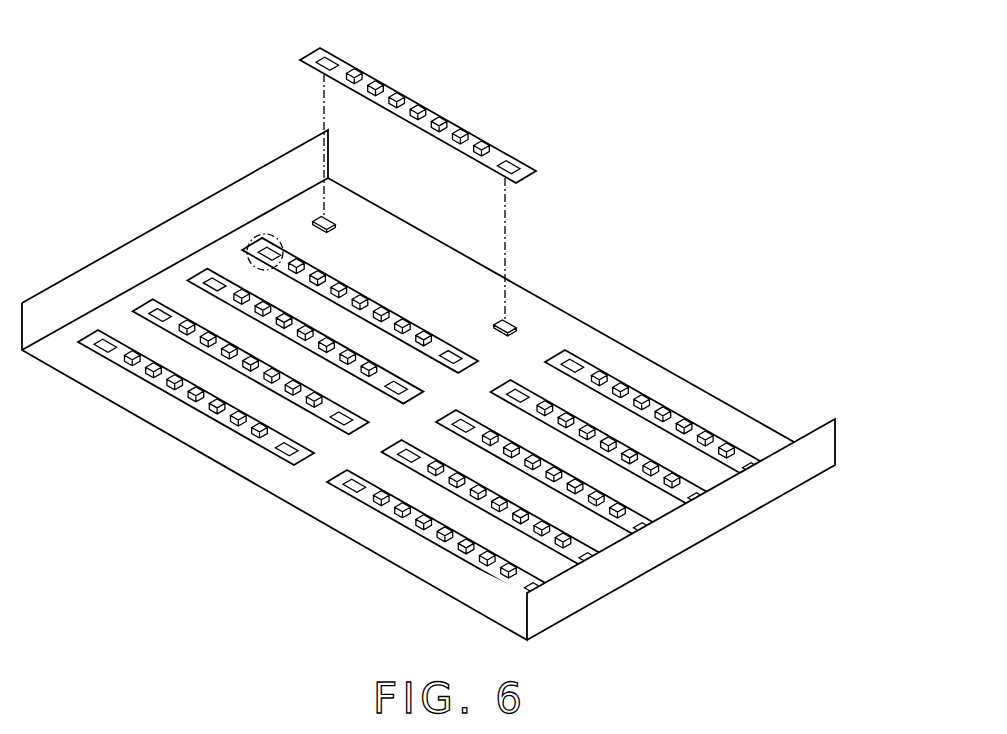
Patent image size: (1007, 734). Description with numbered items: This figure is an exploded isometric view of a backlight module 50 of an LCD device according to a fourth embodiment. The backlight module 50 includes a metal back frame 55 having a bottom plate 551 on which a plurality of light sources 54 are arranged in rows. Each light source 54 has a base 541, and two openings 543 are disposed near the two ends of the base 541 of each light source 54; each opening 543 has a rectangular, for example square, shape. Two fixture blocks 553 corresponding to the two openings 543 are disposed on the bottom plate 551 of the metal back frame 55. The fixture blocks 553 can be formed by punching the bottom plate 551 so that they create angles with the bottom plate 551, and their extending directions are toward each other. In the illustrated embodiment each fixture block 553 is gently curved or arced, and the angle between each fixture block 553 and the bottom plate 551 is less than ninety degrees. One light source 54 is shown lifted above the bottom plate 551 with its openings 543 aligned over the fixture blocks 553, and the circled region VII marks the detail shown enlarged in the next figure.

The backlight module 50 is at (568, 100).
The light source 54 is at (444, 114).
The base 541 is at (428, 118).
The opening 543 is at (516, 163).
The metal back frame 55 is at (722, 381).
The bottom plate 551 is at (630, 368).
The fixture block 553 is at (508, 323).
The detail view indicator VII is at (256, 238).